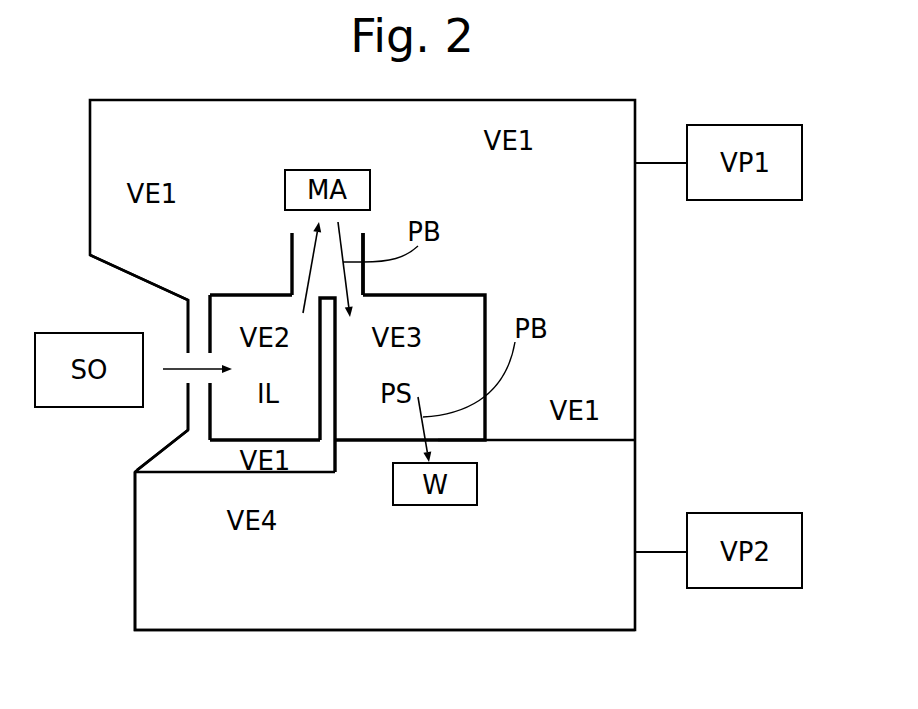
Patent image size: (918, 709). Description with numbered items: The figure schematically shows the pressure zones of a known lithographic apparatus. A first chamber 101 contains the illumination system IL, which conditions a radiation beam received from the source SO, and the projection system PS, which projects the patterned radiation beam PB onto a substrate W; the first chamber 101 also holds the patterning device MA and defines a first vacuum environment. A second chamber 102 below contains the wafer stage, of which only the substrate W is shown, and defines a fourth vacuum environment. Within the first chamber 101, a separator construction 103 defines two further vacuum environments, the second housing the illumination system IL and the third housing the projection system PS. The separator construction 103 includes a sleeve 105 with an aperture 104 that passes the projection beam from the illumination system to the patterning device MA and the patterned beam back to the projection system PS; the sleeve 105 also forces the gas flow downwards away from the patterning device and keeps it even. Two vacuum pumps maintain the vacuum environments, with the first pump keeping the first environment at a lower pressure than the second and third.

The first chamber 101 is at (635, 311).
The second chamber 102 is at (530, 632).
The separator construction 103 is at (200, 285).
The aperture 104 is at (365, 233).
The sleeve 105 is at (290, 253).